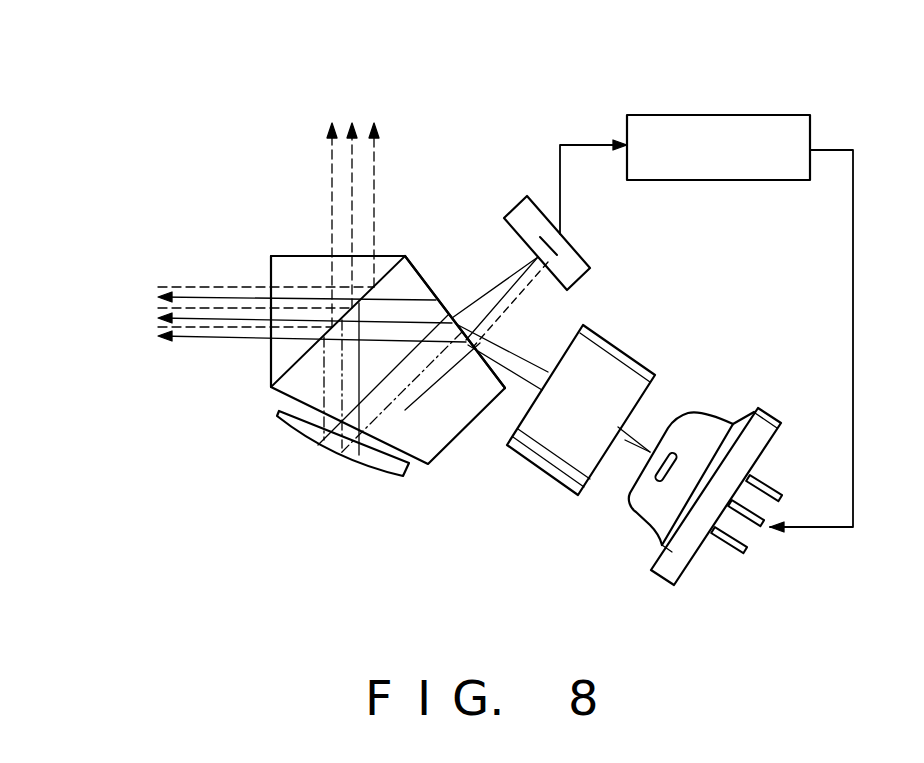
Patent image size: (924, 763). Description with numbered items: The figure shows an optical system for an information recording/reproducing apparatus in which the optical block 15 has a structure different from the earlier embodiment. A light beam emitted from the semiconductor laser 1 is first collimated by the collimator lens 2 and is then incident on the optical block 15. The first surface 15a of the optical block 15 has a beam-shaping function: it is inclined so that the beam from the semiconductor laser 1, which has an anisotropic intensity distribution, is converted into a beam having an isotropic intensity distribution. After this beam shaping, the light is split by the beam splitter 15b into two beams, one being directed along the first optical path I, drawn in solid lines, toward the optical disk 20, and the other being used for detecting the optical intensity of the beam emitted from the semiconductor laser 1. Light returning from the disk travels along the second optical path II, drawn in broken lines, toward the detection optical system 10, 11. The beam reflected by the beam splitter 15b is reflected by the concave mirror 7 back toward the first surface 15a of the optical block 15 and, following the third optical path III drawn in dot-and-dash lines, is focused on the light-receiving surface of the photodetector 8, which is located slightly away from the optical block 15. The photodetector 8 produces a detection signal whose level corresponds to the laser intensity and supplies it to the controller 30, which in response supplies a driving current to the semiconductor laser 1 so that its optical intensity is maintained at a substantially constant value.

The semiconductor laser 1 is at (772, 405).
The collimator lens 2 is at (618, 360).
The concave mirror 7 is at (375, 465).
The photodetector 8 is at (578, 252).
The detection optical system 10 is at (380, 65).
The detection optical system 11 is at (380, 65).
The optical block 15 is at (268, 262).
The first surface 15a is at (429, 288).
The beam splitter 15b is at (388, 257).
The optical disk 20 is at (86, 310).
The controller 30 is at (753, 122).
The first optical path I is at (222, 340).
The second optical path II is at (333, 185).
The third optical path III is at (437, 367).